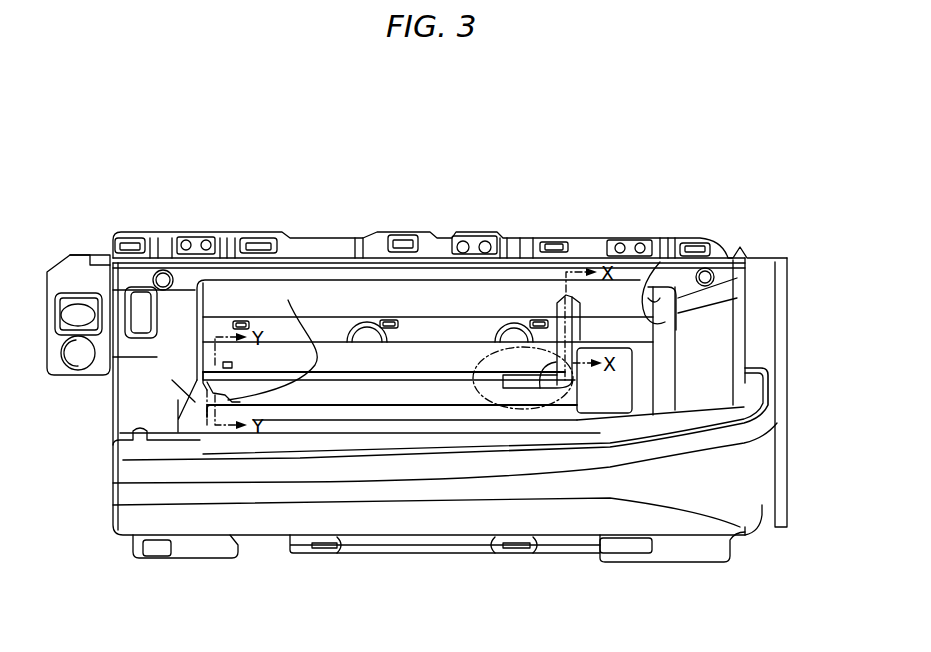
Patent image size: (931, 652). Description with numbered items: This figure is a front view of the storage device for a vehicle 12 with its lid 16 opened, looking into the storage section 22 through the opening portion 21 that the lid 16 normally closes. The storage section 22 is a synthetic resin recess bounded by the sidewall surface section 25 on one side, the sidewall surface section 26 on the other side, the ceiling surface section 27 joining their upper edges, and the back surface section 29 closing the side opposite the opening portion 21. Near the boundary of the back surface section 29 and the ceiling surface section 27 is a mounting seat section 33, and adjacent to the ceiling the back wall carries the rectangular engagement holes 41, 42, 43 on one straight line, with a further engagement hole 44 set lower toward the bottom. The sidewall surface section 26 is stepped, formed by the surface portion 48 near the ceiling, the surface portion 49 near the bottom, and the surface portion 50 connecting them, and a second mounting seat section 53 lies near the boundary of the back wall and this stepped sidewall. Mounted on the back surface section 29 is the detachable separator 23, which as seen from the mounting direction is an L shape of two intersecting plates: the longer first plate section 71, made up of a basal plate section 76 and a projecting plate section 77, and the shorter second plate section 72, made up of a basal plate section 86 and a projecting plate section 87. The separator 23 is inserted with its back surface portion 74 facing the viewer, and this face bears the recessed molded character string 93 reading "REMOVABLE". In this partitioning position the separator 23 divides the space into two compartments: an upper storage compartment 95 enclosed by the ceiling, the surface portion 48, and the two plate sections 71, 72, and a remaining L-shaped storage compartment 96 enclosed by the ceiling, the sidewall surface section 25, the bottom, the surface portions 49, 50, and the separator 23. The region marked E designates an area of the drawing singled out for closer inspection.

The storage device for a vehicle 12 is at (724, 197).
The lid 16 is at (749, 483).
The opening portion 21 is at (697, 250).
The storage section 22 is at (342, 293).
The separator 23 is at (410, 412).
The sidewall surface section 25 is at (648, 300).
The sidewall surface section 26 is at (222, 320).
The ceiling surface section 27 is at (426, 306).
The back surface section 29 is at (640, 388).
The mounting seat section 33 is at (548, 312).
The engagement hole 41 is at (536, 320).
The engagement hole 42 is at (390, 320).
The engagement hole 43 is at (244, 320).
The engagement hole 44 is at (240, 364).
The surface portion 48 is at (205, 345).
The surface portion 49 is at (192, 402).
The surface portion 50 is at (197, 388).
The mounting seat section 53 is at (304, 398).
The first plate section 71 is at (357, 407).
The second plate section 72 is at (630, 348).
The back surface portion 74 is at (433, 382).
The basal plate section 76 is at (326, 407).
The projecting plate section 77 is at (213, 384).
The basal plate section 86 is at (523, 385).
The projecting plate section 87 is at (566, 305).
The character string 93 is at (548, 392).
The storage compartment 95 is at (190, 290).
The storage compartment 96 is at (298, 437).
The enlarged region E is at (605, 408).